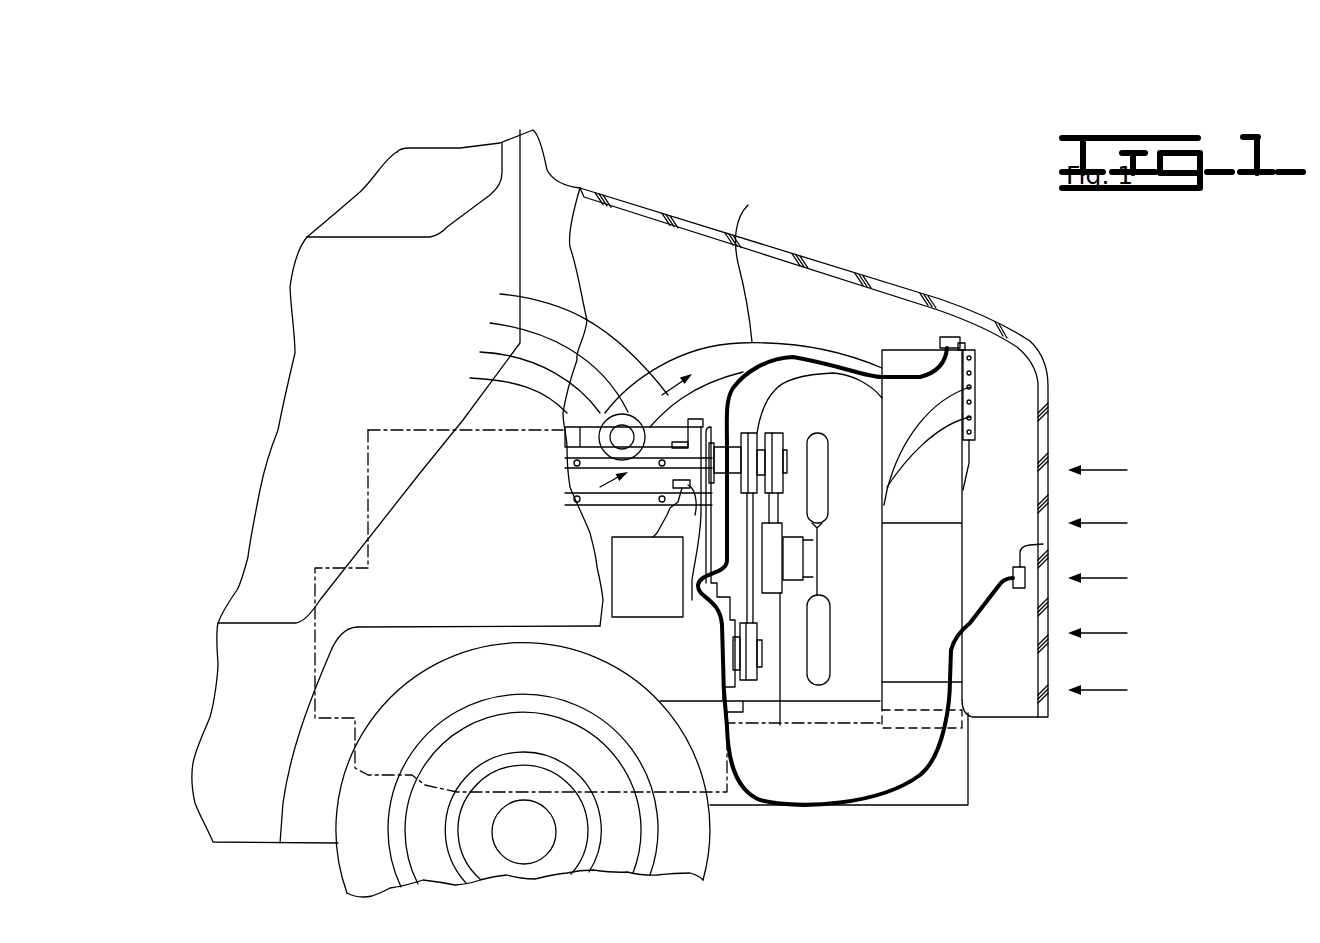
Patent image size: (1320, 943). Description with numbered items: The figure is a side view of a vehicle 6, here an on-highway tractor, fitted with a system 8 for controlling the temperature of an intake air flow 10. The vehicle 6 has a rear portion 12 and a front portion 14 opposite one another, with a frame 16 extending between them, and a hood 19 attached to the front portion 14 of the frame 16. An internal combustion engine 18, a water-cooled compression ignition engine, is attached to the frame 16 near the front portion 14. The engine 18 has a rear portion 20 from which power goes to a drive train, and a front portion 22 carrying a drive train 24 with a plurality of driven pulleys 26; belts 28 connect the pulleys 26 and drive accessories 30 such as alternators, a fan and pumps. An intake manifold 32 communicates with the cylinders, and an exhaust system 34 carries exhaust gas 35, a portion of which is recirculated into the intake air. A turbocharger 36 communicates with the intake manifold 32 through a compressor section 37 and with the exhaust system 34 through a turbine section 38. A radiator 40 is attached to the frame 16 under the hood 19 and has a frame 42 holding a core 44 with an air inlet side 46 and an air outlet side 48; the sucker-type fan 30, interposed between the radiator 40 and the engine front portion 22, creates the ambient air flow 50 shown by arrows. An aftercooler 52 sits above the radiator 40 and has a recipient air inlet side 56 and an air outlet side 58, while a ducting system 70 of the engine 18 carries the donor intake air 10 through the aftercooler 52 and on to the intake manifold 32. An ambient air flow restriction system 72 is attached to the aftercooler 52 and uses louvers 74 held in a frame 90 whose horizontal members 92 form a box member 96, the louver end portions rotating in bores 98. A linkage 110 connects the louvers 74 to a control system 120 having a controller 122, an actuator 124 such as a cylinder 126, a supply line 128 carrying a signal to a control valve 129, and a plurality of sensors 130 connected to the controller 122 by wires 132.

The vehicle 6 is at (800, 93).
The system 8 is at (833, 154).
The intake air flow 10 is at (500, 294).
The rear portion 12 is at (340, 356).
The front portion 14 is at (860, 807).
The frame 16 is at (793, 781).
The internal combustion engine 18 is at (688, 656).
The hood 19 is at (655, 202).
The rear portion 20 is at (368, 477).
The front portion 22 is at (712, 532).
The drive train 24 is at (771, 402).
The driven pulleys 26 is at (783, 433).
The belts 28 is at (780, 725).
The accessories 30 is at (822, 660).
The intake manifold 32 is at (437, 430).
The exhaust system 34 is at (568, 492).
The exhaust gas 35 is at (672, 447).
The turbocharger 36 is at (480, 352).
The compressor section 37 is at (490, 323).
The turbine section 38 is at (470, 378).
The radiator 40 is at (963, 490).
The frame 42 is at (977, 717).
The core 44 is at (946, 606).
The air inlet side 46 is at (963, 647).
The air outlet side 48 is at (882, 617).
The flow of recipient ambient air 50 is at (1105, 523).
The aftercooler 52 is at (917, 350).
The recipient air inlet side 56 is at (975, 410).
The air outlet side 58 is at (884, 408).
The ducting system 70 is at (748, 205).
The ambient air flow restriction system 72 is at (1060, 297).
The louvers 74 is at (975, 388).
The frame 90 is at (975, 363).
The horizontal members 92 is at (975, 432).
The box member 96 is at (969, 442).
The bores 98 is at (887, 487).
The linkage 110 is at (965, 343).
The control system 120 is at (870, 192).
The controller 122 is at (670, 608).
The actuator 124 is at (958, 337).
The cylinder 126 is at (950, 337).
The supply line 128 is at (895, 374).
The control valve 129 is at (946, 337).
The sensors 130 is at (673, 484).
The wires 132 is at (692, 545).